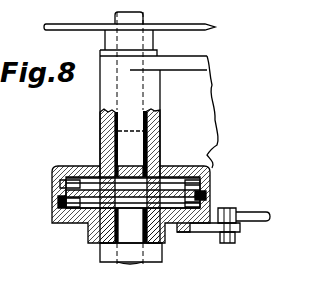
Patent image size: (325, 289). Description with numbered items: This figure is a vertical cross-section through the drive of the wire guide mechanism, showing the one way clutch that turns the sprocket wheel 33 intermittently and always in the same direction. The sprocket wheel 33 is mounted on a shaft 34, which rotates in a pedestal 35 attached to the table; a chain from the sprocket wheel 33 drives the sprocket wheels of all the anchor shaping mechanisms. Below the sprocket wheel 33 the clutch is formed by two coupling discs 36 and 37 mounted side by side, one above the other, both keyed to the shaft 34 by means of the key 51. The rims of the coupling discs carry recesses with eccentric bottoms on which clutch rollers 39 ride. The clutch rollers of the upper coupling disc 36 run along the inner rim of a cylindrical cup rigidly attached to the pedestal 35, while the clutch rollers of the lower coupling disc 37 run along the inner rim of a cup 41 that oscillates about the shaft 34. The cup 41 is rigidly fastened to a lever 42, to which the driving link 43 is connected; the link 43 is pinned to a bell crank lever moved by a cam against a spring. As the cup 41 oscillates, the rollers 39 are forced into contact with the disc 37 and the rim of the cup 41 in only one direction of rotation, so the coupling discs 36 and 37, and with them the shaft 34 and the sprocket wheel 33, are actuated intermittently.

The sprocket wheel 33 is at (215, 26).
The shaft 34 is at (128, 122).
The pedestal 35 is at (197, 77).
The upper coupling disc 36 is at (210, 172).
The lower coupling disc 37 is at (206, 202).
The clutch rollers 39 is at (60, 204).
The cup 41 is at (84, 207).
The lever 42 is at (209, 233).
The driving link 43 is at (258, 222).
The key 51 is at (137, 190).